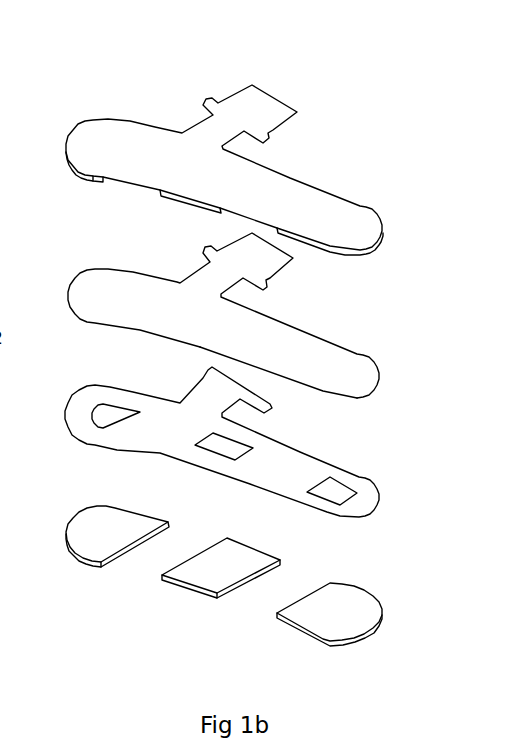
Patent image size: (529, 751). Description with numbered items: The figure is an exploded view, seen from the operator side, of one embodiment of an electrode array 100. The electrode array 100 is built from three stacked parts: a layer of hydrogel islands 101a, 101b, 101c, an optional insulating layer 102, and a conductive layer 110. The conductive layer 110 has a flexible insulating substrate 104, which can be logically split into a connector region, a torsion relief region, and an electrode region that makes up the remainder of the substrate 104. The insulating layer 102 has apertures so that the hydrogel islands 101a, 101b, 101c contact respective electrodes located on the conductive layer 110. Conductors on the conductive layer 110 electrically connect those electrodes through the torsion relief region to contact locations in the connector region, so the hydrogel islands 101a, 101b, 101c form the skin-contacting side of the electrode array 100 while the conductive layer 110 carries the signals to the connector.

The electrode array 100 is at (134, 85).
The flexible insulating substrate 104 is at (98, 285).
The conductive layer 110 is at (352, 333).
The insulating layer 102 is at (70, 437).
The hydrogel island 101a is at (101, 586).
The hydrogel island 101b is at (186, 605).
The hydrogel island 101c is at (302, 645).